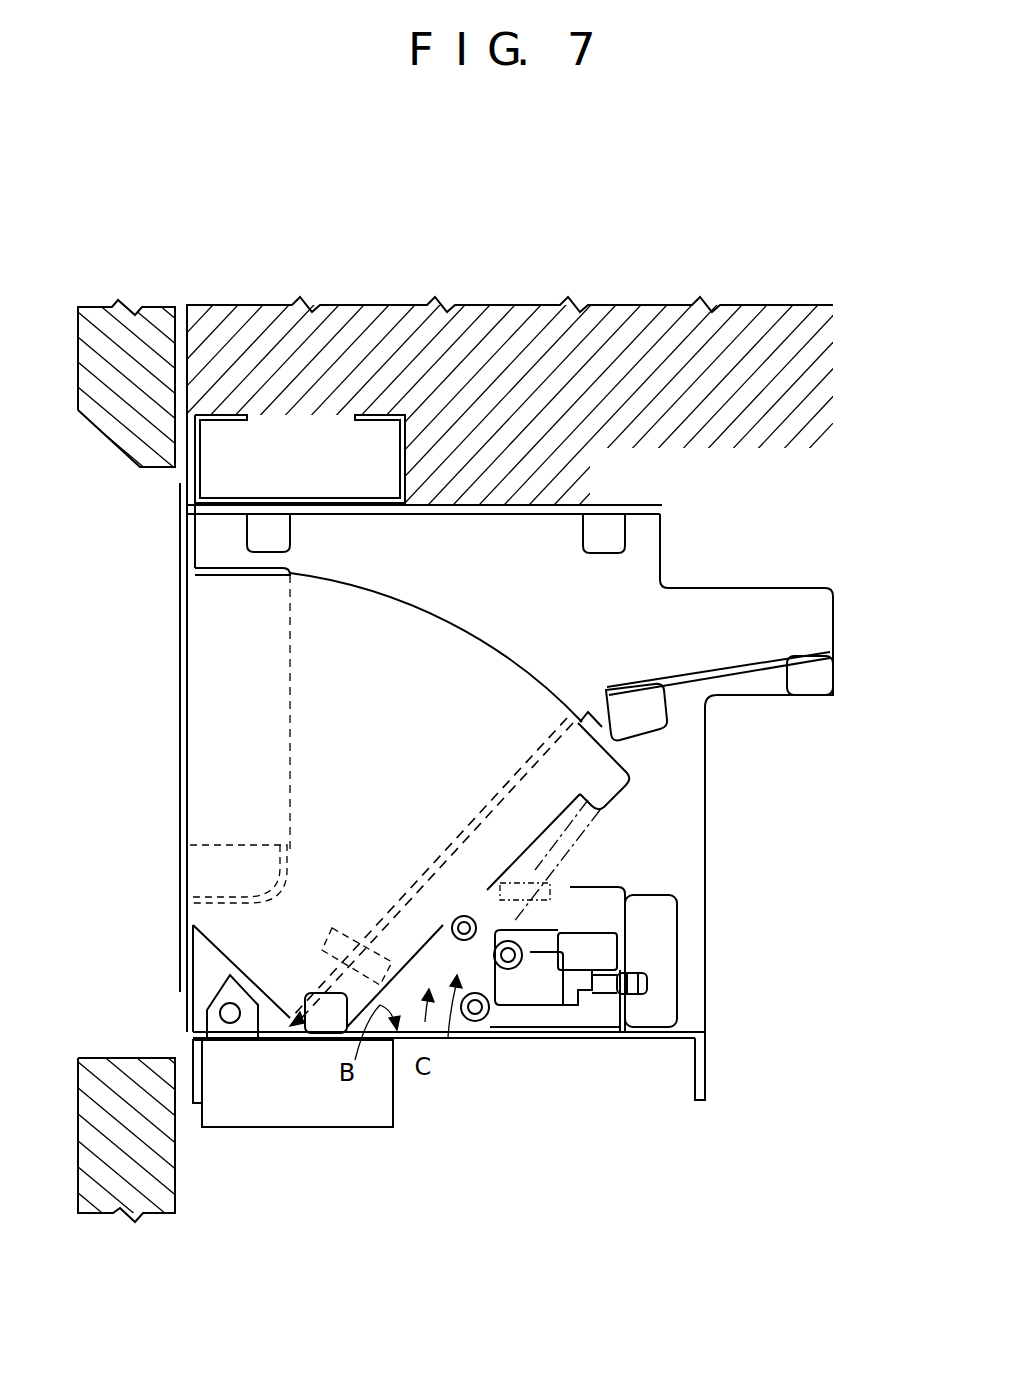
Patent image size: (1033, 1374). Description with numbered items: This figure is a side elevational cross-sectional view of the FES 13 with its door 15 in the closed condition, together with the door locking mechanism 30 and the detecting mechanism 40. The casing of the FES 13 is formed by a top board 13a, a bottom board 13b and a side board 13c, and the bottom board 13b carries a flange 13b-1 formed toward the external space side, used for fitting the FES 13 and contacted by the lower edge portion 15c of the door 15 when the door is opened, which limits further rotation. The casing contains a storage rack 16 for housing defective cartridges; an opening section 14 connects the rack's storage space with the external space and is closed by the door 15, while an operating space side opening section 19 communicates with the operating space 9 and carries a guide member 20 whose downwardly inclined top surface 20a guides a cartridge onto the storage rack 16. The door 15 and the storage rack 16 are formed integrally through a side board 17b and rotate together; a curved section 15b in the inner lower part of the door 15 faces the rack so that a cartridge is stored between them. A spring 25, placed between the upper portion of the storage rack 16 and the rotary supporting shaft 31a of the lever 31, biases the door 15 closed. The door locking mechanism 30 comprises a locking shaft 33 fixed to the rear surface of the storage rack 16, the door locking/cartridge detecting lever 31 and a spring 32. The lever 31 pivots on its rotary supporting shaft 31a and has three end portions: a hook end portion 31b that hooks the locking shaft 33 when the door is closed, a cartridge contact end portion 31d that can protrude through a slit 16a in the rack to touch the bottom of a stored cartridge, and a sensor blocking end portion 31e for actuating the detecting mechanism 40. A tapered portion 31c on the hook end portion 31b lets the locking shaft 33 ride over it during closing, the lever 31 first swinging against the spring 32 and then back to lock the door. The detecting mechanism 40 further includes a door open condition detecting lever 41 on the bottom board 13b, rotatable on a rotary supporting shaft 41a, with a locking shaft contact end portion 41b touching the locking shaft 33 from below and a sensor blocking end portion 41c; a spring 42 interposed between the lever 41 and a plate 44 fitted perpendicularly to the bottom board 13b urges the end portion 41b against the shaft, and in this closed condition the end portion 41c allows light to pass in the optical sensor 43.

The operating space 9 is at (872, 535).
The FES 13 is at (162, 497).
The top board 13a is at (548, 506).
The bottom board 13b is at (450, 1040).
The flange 13b-1 is at (205, 1075).
The side board 13c is at (640, 543).
The opening section 14 is at (245, 562).
The door 15 is at (178, 645).
The curved section 15b is at (257, 905).
The lower edge portion 15c is at (183, 992).
The storage rack 16 is at (460, 860).
The slit 16a is at (375, 895).
The side board 17b is at (440, 628).
The operating space side opening section 19 is at (700, 572).
The guide member 20 is at (785, 642).
The top surface 20a is at (673, 673).
The spring 25 is at (600, 812).
The door locking mechanism 30 is at (430, 1040).
The door locking/cartridge detecting lever 31 is at (520, 1022).
The rotary supporting shaft 31a is at (480, 1020).
The hook end portion 31b is at (480, 905).
The tapered portion 31c is at (455, 850).
The cartridge contact end portion 31d is at (345, 920).
The sensor blocking end portion 31e is at (598, 1030).
The spring 32 is at (393, 1040).
The locking shaft 33 is at (466, 916).
The detecting mechanism 40 is at (618, 917).
The door open condition detecting lever 41 is at (552, 932).
The rotary supporting shaft 41a is at (512, 962).
The locking shaft contact end portion 41b is at (412, 950).
The sensor blocking end portion 41c is at (597, 950).
The spring 42 is at (562, 892).
The optical sensor 43 is at (640, 966).
The plate 44 is at (660, 910).